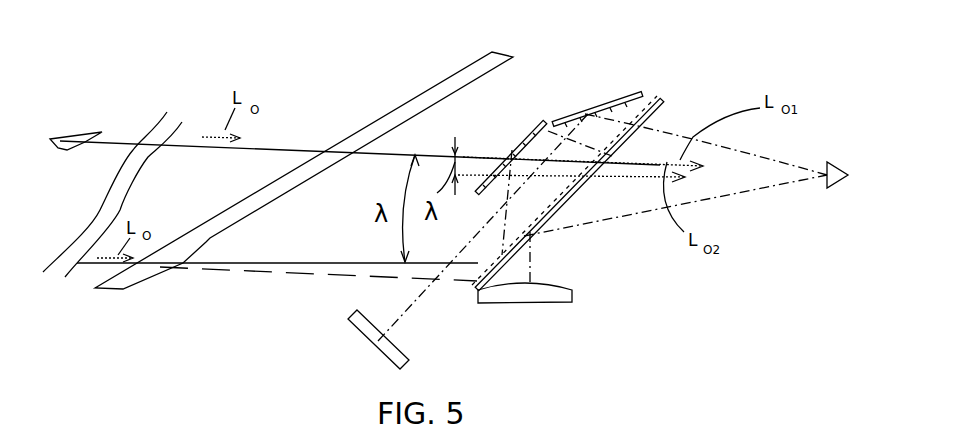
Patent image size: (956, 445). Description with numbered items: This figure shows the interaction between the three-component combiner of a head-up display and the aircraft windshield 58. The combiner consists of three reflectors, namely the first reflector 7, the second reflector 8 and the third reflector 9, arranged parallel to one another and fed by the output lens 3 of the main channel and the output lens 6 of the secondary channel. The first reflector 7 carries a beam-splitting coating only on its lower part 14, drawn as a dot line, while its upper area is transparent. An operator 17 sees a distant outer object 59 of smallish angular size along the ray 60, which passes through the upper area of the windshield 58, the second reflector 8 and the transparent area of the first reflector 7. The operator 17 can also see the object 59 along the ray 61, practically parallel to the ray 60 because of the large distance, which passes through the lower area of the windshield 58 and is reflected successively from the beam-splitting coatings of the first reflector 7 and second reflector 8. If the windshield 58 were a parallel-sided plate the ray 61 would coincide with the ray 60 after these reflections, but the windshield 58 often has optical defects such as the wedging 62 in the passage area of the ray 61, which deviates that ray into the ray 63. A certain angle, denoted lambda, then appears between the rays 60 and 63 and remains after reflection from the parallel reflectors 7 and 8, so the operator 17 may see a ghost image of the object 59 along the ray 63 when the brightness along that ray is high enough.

The output lens 3 is at (538, 302).
The output lens 6 is at (365, 337).
The first reflector 7 is at (620, 146).
The second reflector 8 is at (518, 137).
The third reflector 9 is at (640, 93).
The lower part 14 is at (555, 217).
The operator 17 is at (815, 185).
The windshield 58 is at (398, 102).
The distant outer object 59 is at (80, 143).
The ray 60 is at (293, 148).
The ray 61 is at (97, 265).
The wedging 62 is at (157, 270).
The ray 63 is at (347, 265).